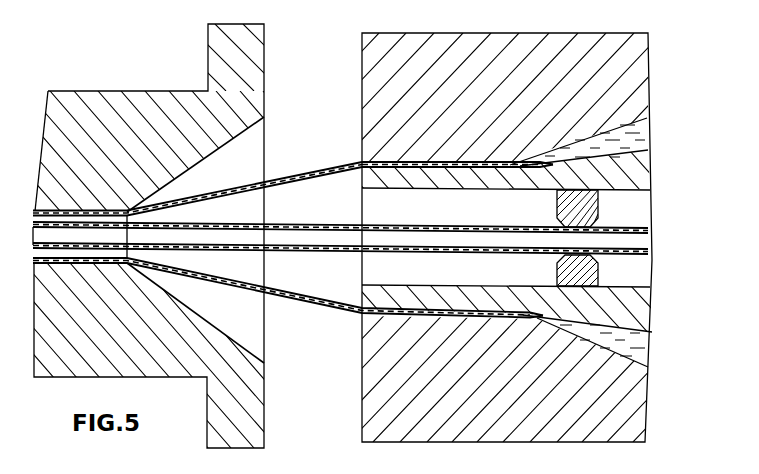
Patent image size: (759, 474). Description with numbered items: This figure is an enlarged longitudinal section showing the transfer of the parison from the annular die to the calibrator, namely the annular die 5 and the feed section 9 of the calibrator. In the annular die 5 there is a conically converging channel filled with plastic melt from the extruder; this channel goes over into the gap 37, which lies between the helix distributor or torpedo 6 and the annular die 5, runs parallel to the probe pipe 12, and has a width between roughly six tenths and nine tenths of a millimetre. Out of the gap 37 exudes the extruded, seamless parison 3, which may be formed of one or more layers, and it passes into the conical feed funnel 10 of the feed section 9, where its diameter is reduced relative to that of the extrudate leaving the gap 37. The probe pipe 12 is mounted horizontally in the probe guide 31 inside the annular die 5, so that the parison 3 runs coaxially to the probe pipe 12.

The annular die 5 is at (515, 53).
The feed section 9 is at (187, 108).
The conical feed funnel 10 is at (208, 157).
The parison 3 is at (267, 178).
The probe pipe 12 is at (218, 250).
The gap 37 is at (418, 163).
The helix distributor or torpedo 6 is at (406, 170).
The probe guide 31 is at (560, 257).